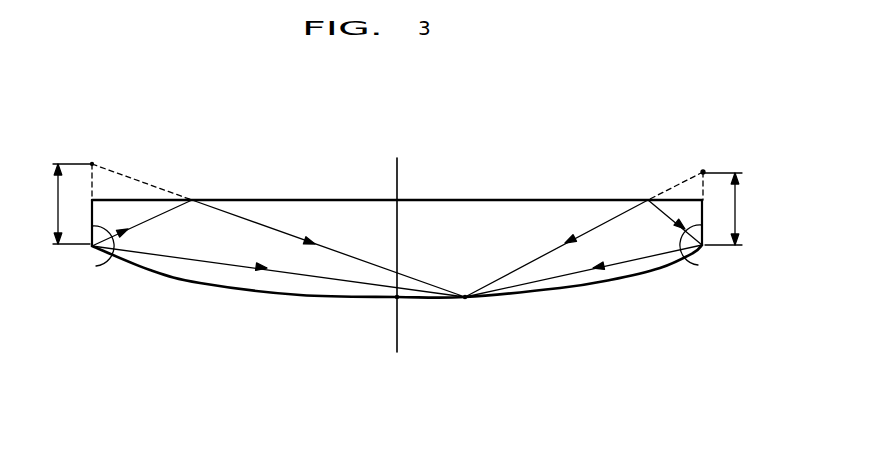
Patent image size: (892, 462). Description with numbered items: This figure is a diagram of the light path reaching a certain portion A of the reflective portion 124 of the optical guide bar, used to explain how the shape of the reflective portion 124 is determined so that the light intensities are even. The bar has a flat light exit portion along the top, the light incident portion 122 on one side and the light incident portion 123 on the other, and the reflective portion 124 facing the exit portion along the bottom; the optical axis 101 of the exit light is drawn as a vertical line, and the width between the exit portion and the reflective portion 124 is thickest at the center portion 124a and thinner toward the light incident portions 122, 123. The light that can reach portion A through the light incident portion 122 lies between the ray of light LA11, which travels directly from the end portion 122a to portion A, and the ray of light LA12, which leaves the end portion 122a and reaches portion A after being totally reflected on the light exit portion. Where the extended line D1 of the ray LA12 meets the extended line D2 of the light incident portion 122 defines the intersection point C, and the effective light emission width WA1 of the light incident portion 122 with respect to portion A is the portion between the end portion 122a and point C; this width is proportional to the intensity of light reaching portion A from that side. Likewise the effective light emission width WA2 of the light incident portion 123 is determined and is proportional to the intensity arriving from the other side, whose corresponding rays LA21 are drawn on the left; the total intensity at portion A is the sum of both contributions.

The optical axis 101 is at (397, 177).
The light incident portion 122 is at (692, 255).
The end portion of the light incident portion 122a is at (708, 248).
The light incident portion 123 is at (110, 258).
The reflective portion 124 is at (272, 296).
The center portion of the reflective portion 124a is at (397, 297).
The portion A of the reflective portion A is at (463, 315).
The intersection point C is at (705, 157).
The extended line of the ray of light LA12 D1 is at (681, 186).
The extended line of the light incident portion D2 is at (703, 188).
The ray of light LA11 is at (560, 274).
The ray of light LA12 is at (595, 233).
The left-side light paths LA21 is at (278, 248).
The effective light emission width WA1 is at (747, 209).
The effective light emission width WA2 is at (50, 204).